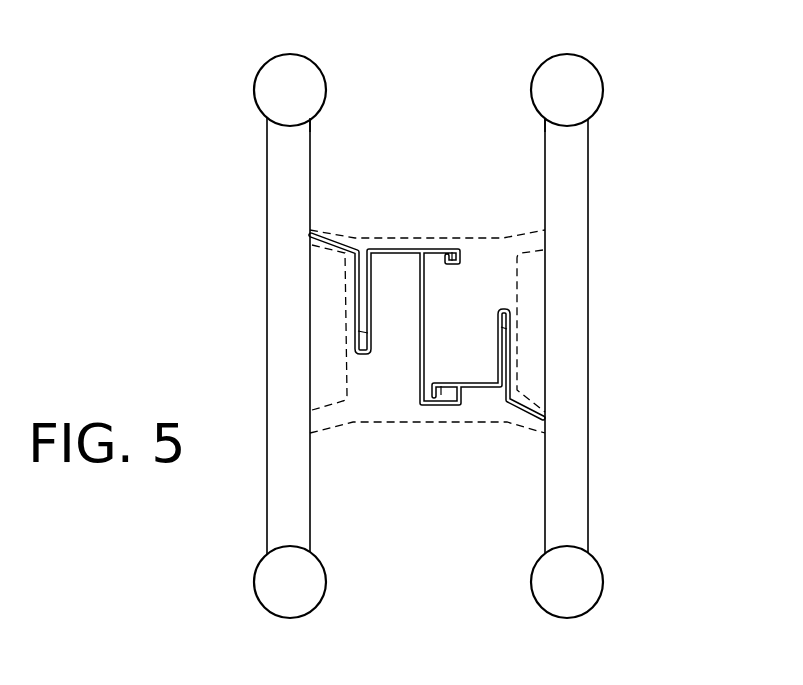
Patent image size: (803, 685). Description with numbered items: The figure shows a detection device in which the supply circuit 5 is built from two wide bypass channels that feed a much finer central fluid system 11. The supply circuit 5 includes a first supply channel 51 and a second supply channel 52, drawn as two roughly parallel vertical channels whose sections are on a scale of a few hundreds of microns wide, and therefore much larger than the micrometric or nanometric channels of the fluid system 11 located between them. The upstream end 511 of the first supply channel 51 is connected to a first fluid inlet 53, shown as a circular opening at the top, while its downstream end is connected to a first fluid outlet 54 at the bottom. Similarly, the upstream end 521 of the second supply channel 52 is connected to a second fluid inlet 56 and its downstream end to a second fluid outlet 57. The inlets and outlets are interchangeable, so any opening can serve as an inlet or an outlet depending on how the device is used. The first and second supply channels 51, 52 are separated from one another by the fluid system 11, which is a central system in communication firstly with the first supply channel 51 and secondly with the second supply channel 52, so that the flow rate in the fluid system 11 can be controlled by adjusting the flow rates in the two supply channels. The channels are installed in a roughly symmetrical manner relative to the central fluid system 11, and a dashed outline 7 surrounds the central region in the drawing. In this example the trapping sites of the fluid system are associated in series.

The supply circuit 5 is at (510, 87).
The cover (dashed outline) 7 is at (447, 237).
The fluid system 11 is at (416, 334).
The first supply channel 51 is at (258, 310).
The second supply channel 52 is at (592, 339).
The first fluid inlet 53 is at (272, 94).
The first fluid outlet 54 is at (282, 587).
The second fluid inlet 56 is at (592, 92).
The second fluid outlet 57 is at (582, 589).
The upstream end 511 is at (310, 118).
The upstream end 521 is at (545, 118).